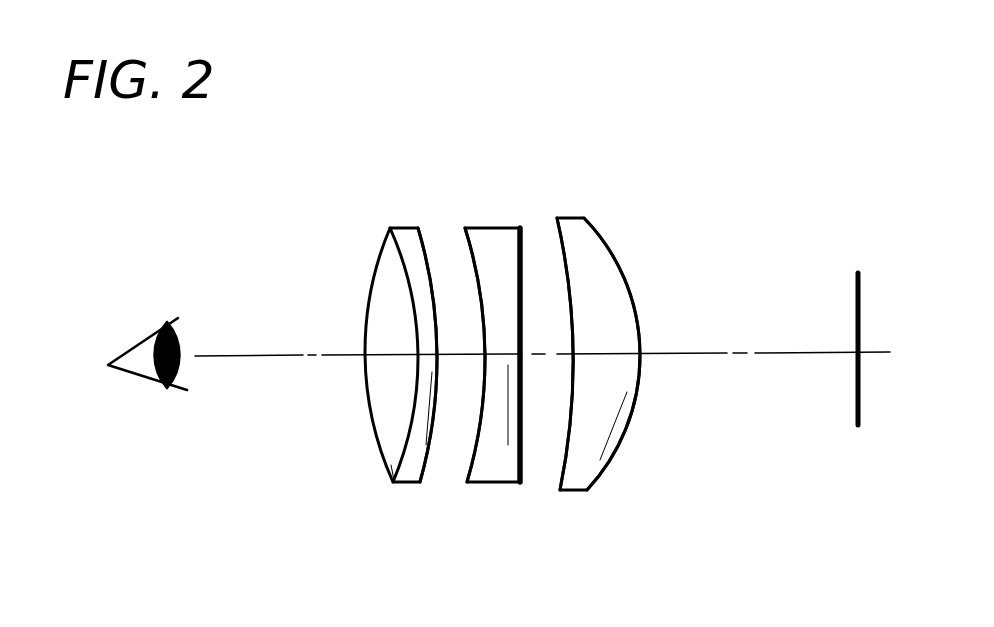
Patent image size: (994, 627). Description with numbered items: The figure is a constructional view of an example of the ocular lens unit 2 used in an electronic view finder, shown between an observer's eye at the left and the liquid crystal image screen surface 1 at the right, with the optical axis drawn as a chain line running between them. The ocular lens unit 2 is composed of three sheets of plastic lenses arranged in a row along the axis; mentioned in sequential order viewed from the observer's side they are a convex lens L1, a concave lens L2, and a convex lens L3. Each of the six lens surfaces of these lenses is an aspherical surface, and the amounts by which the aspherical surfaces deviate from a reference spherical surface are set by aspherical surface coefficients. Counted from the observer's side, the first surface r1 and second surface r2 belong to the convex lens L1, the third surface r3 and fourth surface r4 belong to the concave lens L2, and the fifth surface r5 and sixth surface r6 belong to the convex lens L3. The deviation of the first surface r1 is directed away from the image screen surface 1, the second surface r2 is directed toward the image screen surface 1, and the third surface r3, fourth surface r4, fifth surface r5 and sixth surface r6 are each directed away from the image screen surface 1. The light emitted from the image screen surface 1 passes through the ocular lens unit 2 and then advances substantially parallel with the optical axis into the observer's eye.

The image screen surface 1 is at (857, 388).
The ocular lens unit 2 is at (506, 312).
The convex lens L1 is at (391, 364).
The concave lens L2 is at (503, 356).
The convex lens L3 is at (620, 356).
The first surface r1 is at (377, 260).
The second surface r2 is at (435, 327).
The third surface r3 is at (473, 258).
The fourth surface r4 is at (520, 258).
The fifth surface r5 is at (563, 258).
The sixth surface r6 is at (619, 267).